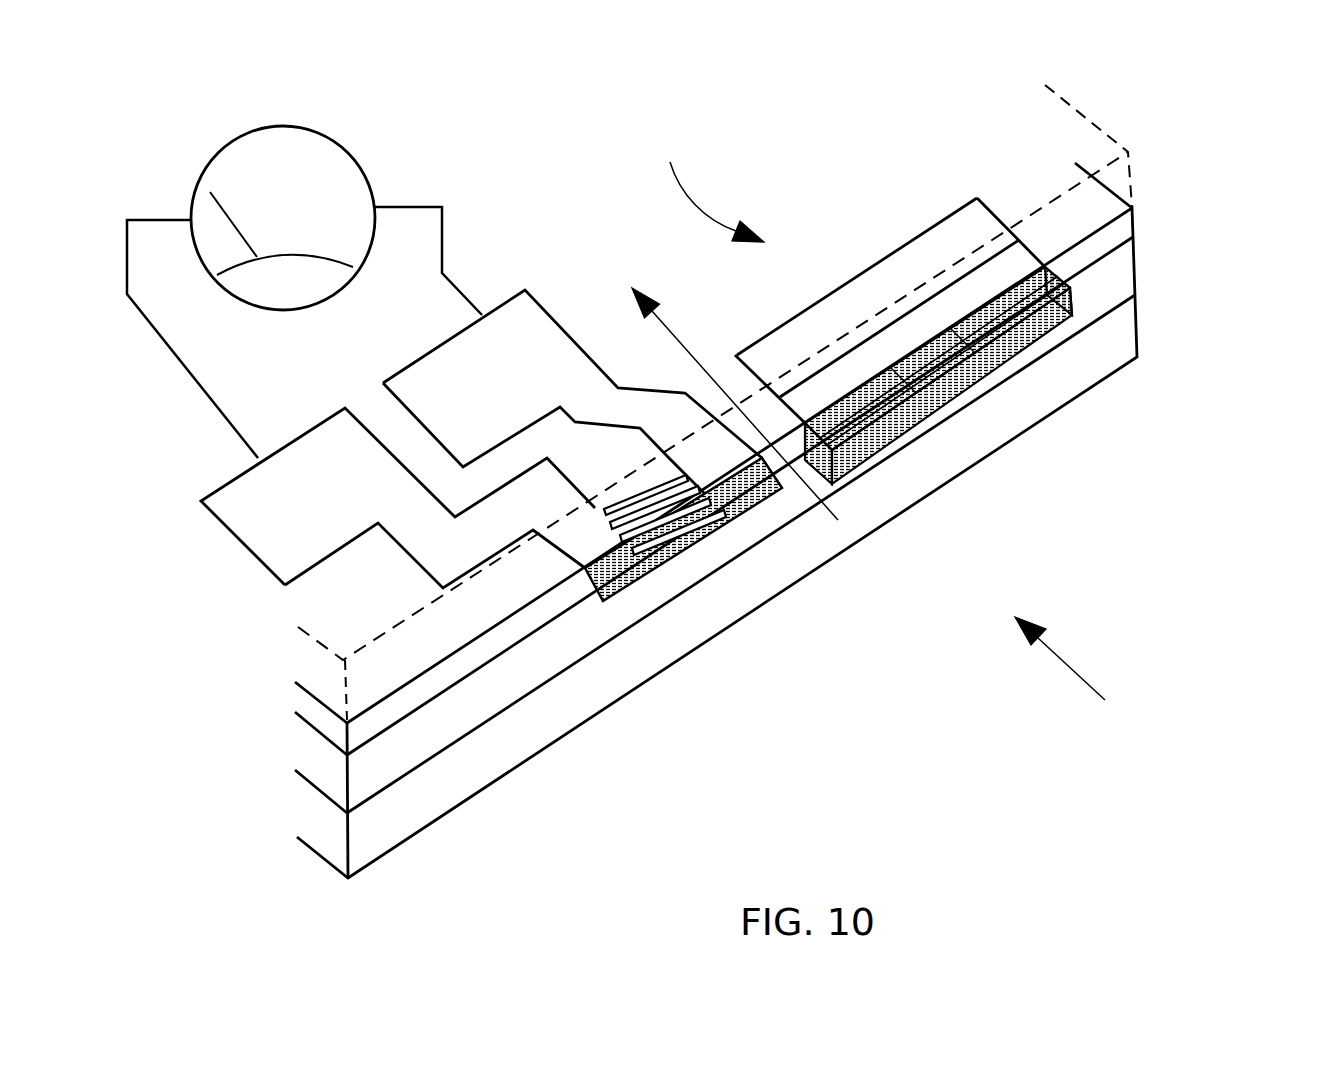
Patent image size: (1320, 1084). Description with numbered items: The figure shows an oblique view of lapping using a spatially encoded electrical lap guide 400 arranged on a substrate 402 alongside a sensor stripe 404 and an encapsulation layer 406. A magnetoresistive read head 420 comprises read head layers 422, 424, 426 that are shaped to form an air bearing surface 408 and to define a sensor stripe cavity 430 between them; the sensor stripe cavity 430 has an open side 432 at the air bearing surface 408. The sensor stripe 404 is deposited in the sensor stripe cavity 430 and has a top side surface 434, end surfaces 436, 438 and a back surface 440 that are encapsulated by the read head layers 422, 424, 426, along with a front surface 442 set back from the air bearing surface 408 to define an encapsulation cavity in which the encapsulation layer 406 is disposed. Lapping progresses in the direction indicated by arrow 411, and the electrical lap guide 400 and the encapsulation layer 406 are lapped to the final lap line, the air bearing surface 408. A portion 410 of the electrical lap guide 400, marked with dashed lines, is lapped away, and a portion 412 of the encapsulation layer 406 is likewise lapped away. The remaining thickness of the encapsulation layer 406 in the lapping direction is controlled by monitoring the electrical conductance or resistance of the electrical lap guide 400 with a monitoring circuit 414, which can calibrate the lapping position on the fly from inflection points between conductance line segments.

The spatially encoded electrical lap guide 400 is at (258, 562).
The substrate 402 is at (437, 718).
The sensor stripe 404 is at (918, 258).
The encapsulation layer 406 is at (997, 282).
The air bearing surface 408 is at (490, 628).
The lapped-away portion of electrical lap guide 410 is at (657, 570).
The lapping direction arrow 411 is at (634, 281).
The lapped-away portion of encapsulation layer 412 is at (935, 380).
The monitoring circuit 414 is at (337, 140).
The magnetoresistive read head 420 is at (1092, 670).
The read head layer 422 is at (1137, 276).
The read head layer 424 is at (1137, 230).
The read head layer 426 is at (1133, 155).
The sensor stripe cavity 430 is at (707, 184).
The open side 432 is at (875, 405).
The top side surface 434 is at (855, 300).
The end surface 436 is at (752, 375).
The end surface 438 is at (990, 207).
The back surface 440 is at (883, 253).
The front surface 442 is at (975, 360).